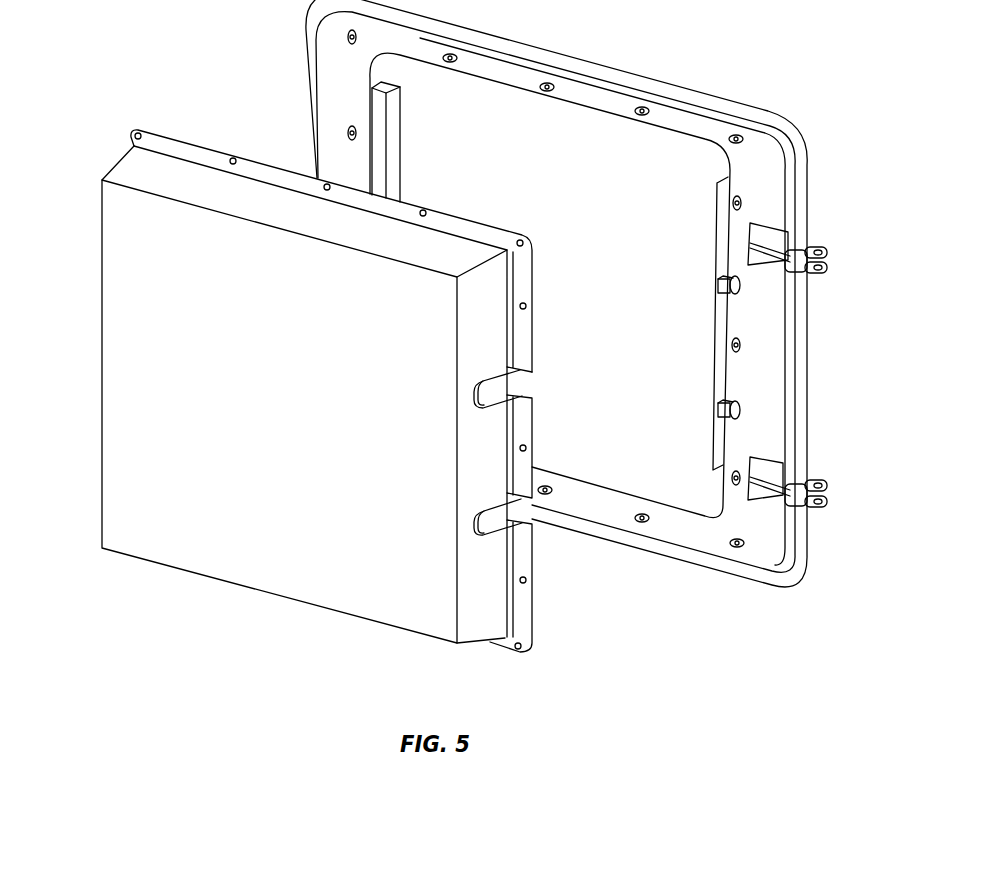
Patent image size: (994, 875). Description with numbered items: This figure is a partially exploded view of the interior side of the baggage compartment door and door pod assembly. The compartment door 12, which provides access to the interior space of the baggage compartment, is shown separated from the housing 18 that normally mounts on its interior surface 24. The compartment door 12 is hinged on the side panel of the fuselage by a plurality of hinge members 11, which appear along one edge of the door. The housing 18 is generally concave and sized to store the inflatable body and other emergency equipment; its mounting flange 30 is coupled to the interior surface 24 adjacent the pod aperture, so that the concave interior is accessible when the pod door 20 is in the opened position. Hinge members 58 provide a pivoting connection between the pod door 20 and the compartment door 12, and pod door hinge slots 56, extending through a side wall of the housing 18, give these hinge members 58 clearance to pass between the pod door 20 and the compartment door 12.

The hinge members 11 is at (795, 243).
The compartment door 12 is at (803, 368).
The housing 18 is at (120, 373).
The pod door 20 is at (577, 137).
The interior surface 24 is at (763, 160).
The mounting flange 30 is at (165, 138).
The pod door hinge slots 56 is at (478, 495).
The hinge members 58 is at (730, 295).